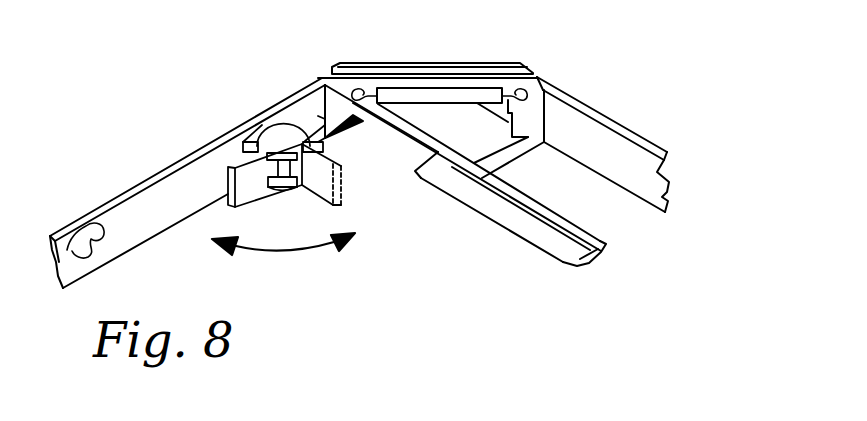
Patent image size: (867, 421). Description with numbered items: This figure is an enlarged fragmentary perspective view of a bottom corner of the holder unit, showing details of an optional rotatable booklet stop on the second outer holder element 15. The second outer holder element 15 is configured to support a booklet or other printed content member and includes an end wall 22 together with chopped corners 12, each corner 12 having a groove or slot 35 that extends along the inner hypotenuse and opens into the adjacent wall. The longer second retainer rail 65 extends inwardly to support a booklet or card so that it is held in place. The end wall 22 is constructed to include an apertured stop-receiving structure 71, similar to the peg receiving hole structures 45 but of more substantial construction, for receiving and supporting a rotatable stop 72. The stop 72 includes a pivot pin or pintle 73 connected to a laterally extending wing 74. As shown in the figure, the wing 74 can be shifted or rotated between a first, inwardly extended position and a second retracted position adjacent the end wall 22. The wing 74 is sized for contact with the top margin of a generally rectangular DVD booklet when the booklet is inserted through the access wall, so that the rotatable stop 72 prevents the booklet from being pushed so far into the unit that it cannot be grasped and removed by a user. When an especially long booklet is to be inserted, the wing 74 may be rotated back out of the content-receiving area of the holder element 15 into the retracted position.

The chopped corner 12 is at (428, 67).
The second outer holder element 15 is at (668, 92).
The end wall 22 is at (168, 196).
The slot 35 is at (592, 35).
The peg receiving hole structure 45 is at (104, 249).
The second retainer rail 65 is at (538, 229).
The apertured stop-receiving structure 71 is at (251, 142).
The rotatable stop 72 is at (368, 218).
The pivot pin 73 is at (287, 168).
The wing 74 is at (245, 186).